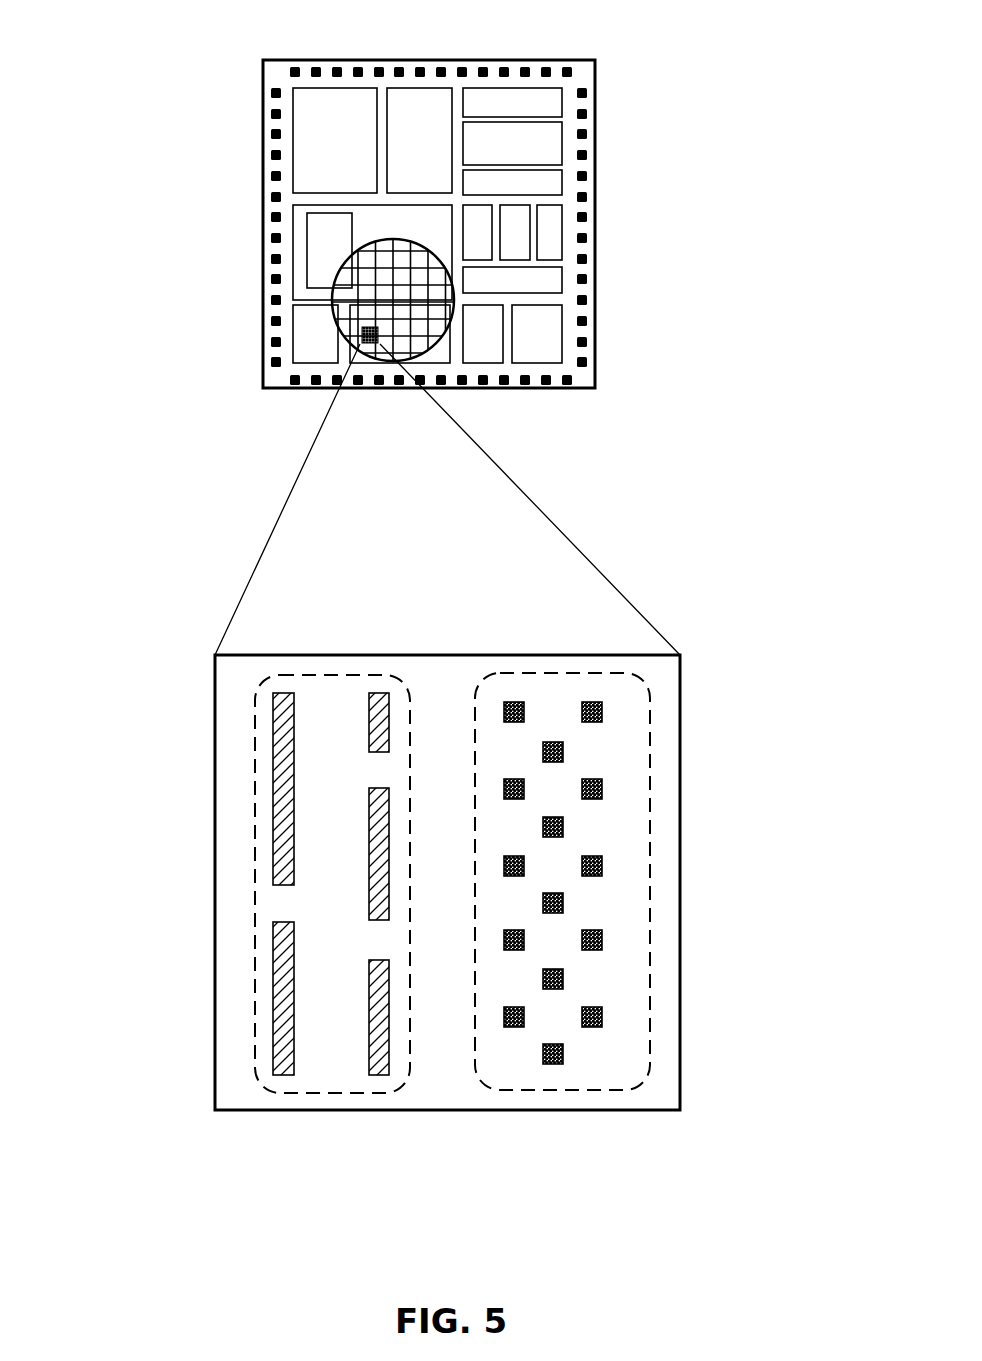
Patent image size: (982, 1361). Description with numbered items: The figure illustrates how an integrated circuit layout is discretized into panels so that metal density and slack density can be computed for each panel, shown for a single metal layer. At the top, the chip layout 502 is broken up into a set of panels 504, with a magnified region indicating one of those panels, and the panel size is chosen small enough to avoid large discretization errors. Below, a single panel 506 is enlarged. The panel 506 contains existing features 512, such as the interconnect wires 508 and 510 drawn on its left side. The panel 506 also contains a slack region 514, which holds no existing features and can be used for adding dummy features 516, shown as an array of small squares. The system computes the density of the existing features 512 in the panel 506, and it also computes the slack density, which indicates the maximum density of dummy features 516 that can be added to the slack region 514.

The chip layout 502 is at (429, 195).
The set of panels 504 is at (318, 267).
The panel 506 is at (447, 865).
The interconnect wire 508 is at (273, 818).
The interconnect wire 510 is at (273, 1008).
The existing features 512 is at (313, 1093).
The slack region 514 is at (600, 1090).
The dummy features 516 is at (622, 1062).